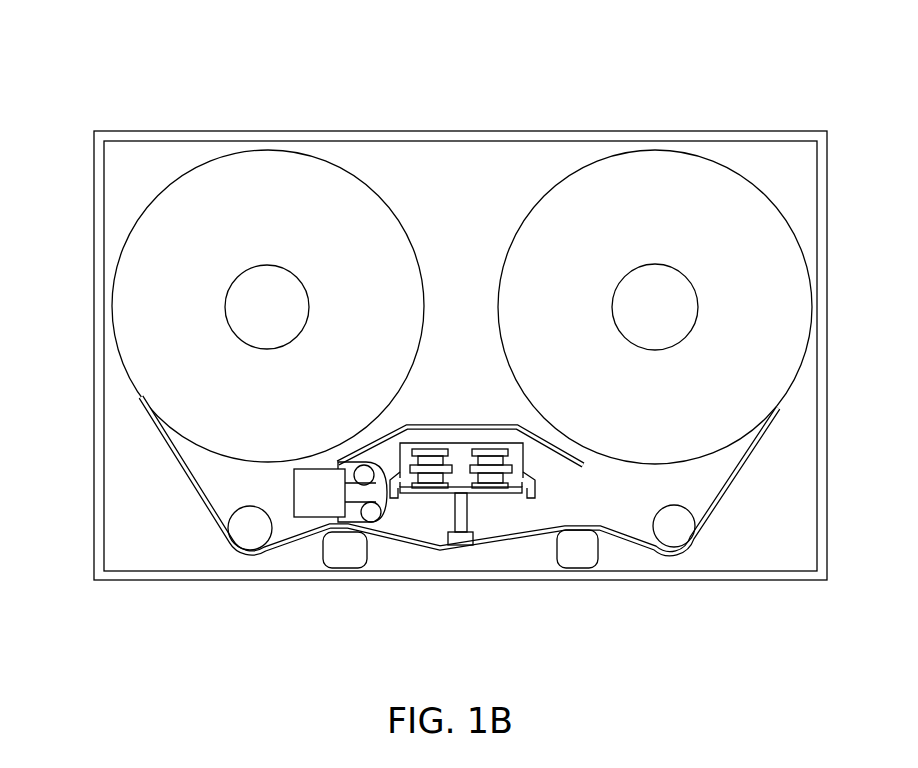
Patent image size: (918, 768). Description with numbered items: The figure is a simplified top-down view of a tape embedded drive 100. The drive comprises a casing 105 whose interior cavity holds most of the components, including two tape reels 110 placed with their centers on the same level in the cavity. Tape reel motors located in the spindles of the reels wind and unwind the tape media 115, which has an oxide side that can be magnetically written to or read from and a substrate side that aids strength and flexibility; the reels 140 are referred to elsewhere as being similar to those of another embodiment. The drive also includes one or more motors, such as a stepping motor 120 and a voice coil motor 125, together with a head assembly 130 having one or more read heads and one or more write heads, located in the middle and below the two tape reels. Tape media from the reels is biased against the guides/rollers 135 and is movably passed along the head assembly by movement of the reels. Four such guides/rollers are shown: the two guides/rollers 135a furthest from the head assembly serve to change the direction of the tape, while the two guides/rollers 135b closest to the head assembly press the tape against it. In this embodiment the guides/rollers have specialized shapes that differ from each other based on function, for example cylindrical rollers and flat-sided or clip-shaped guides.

The tape embedded drive 100 is at (88, 57).
The casing 105 is at (493, 130).
The tape reels 110 is at (253, 150).
The tape media 115 is at (196, 488).
The stepping motor 120 is at (305, 517).
The voice coil motor 125 is at (435, 495).
The head assembly 130 is at (461, 545).
The guides/rollers 135 is at (249, 528).
The guides/rollers 135a is at (678, 533).
The guides/rollers 135b is at (346, 555).
The reels 140 is at (298, 277).